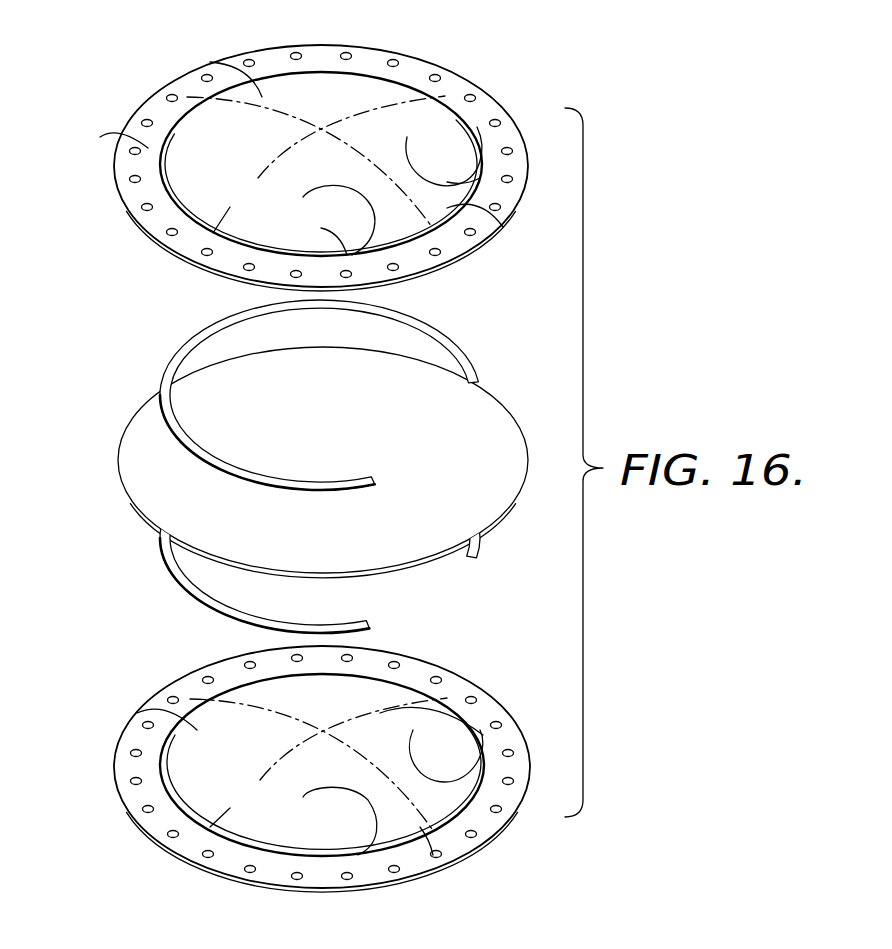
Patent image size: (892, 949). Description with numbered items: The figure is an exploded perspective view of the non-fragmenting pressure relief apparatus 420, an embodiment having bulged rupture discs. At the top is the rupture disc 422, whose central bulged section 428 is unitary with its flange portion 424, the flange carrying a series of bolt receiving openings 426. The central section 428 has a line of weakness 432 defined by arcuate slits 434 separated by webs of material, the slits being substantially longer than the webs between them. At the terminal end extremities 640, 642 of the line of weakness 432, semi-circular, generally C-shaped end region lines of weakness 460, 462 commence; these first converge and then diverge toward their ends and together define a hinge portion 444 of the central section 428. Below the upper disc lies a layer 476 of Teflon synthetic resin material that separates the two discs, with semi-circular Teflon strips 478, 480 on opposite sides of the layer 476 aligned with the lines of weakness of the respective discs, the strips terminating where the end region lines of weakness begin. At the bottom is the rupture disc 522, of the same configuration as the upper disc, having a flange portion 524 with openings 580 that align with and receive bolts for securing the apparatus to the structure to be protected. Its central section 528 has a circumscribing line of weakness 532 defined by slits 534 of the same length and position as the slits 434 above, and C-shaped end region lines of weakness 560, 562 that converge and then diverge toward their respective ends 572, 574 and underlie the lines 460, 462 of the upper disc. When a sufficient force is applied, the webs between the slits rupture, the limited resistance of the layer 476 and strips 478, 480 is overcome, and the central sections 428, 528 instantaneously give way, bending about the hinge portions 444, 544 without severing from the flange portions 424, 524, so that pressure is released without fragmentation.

The non-fragmenting pressure relief apparatus 420 is at (642, 364).
The rupture disc 422 is at (441, 51).
The flange portion 424 is at (108, 135).
The bolt receiving openings 426 is at (349, 50).
The central bulged section 428 is at (210, 62).
The line of weakness 432 is at (203, 213).
The slits 434 is at (238, 237).
The hinge portion 444 is at (503, 227).
The end region line of weakness 460 is at (383, 231).
The end region line of weakness 462 is at (431, 164).
The layer of synthetic resin material 476 is at (126, 440).
The semi-circular Teflon strip 478 is at (458, 341).
The semi-circular Teflon strip 480 is at (360, 622).
The rupture disc 522 is at (212, 662).
The flange portion 524 is at (407, 668).
The central section 528 is at (137, 713).
The line of weakness 532 is at (178, 812).
The slits 534 is at (243, 843).
The hinge portion 544 is at (433, 855).
The end region line of weakness 560 is at (360, 810).
The end region line of weakness 562 is at (447, 774).
The end 572 is at (413, 730).
The end 574 is at (303, 797).
The openings 580 is at (479, 695).
The terminal end extremity 640 is at (315, 235).
The terminal end extremity 642 is at (480, 178).